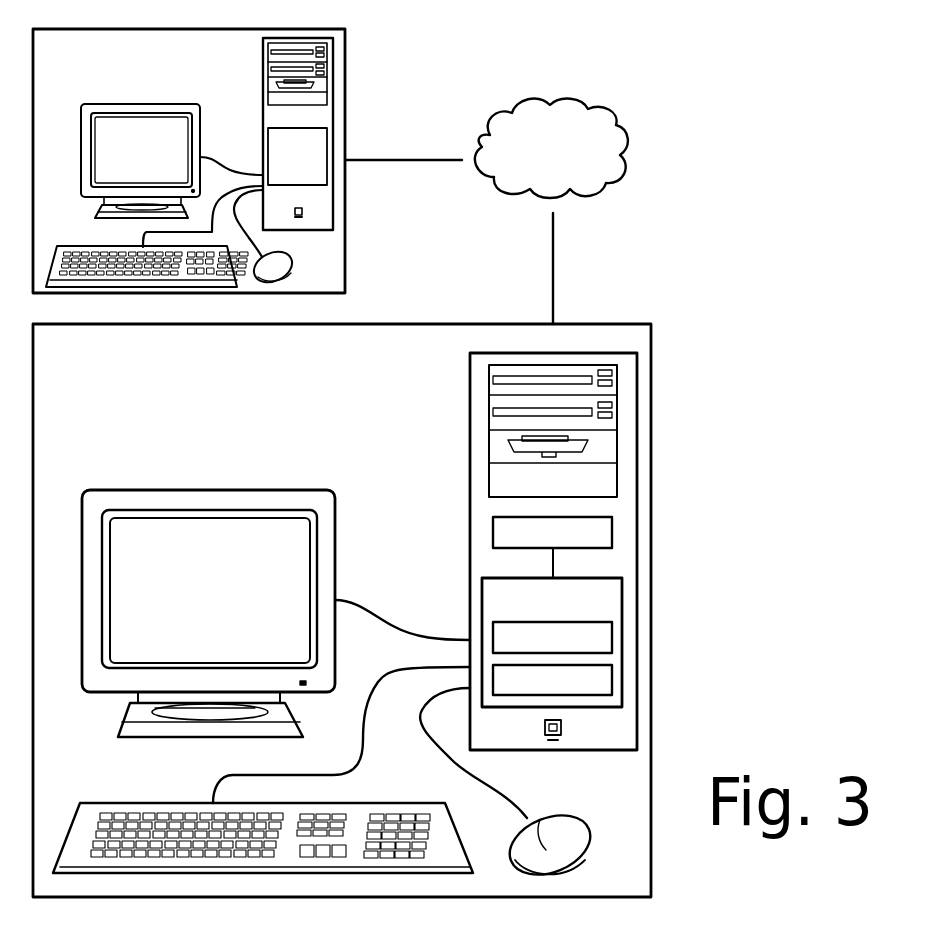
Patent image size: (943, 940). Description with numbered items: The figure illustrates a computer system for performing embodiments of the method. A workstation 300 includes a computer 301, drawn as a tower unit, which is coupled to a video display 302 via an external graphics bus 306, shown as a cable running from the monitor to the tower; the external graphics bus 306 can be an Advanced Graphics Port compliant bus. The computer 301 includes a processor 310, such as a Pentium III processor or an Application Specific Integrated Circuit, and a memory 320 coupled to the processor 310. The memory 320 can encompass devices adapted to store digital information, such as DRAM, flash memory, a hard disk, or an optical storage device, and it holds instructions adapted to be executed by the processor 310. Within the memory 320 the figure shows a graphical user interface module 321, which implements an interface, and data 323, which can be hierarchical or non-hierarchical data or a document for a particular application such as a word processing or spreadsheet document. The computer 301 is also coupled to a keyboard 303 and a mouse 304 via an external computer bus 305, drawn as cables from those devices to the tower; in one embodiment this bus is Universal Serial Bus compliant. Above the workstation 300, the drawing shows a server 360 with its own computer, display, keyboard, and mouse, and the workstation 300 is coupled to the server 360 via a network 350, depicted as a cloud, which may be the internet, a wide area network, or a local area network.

The workstation 300 is at (75, 324).
The computer 301 is at (637, 402).
The video display 302 is at (117, 488).
The keyboard 303 is at (123, 802).
The mouse 304 is at (578, 847).
The external computer bus 305 is at (293, 774).
The external graphics bus 306 is at (415, 629).
The processor 310 is at (612, 532).
The memory 320 is at (622, 593).
The graphical user interface module 321 is at (612, 638).
The data 323 is at (612, 680).
The network 350 is at (617, 115).
The server 360 is at (72, 28).